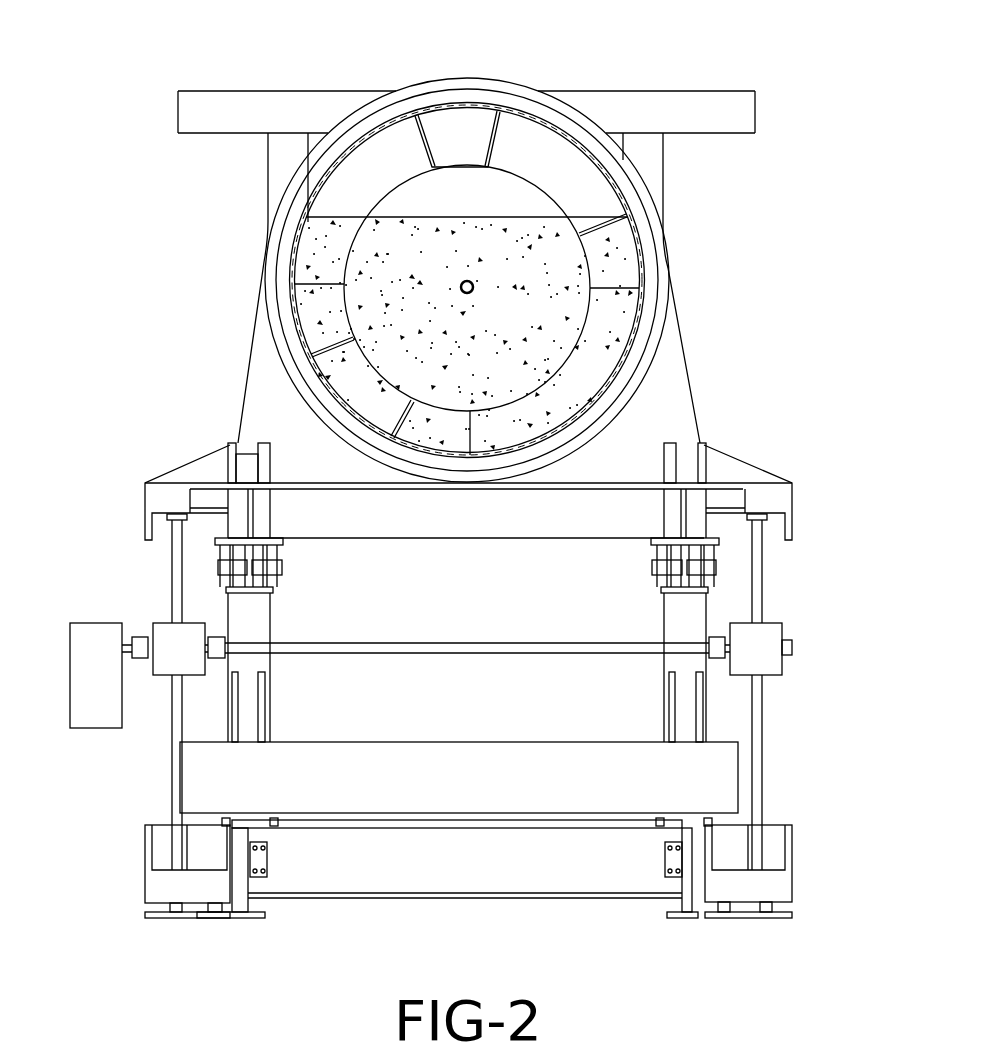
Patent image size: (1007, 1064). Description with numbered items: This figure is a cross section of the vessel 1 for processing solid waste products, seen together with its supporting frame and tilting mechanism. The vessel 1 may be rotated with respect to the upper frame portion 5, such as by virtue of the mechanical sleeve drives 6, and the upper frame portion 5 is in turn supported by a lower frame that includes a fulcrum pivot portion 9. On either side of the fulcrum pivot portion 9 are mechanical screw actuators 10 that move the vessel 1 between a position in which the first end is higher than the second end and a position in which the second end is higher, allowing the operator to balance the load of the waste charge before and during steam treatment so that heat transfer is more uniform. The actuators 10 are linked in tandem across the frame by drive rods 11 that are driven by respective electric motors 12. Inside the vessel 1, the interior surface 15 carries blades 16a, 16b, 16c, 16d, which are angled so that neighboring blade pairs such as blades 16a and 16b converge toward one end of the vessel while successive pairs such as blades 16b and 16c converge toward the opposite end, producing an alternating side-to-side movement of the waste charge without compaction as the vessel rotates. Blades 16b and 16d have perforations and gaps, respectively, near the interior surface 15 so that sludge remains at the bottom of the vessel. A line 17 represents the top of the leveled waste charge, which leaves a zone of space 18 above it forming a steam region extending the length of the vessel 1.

The vessel 1 is at (307, 212).
The upper frame portion 5 is at (700, 92).
The mechanical sleeve drives 6 is at (666, 258).
The fulcrum pivot portion 9 is at (272, 563).
The mechanical screw actuators 10 is at (177, 733).
The drive rods 11 is at (440, 643).
The electric motors 12 is at (77, 653).
The interior surface 15 is at (345, 166).
The blade 16a is at (315, 308).
The blade 16b is at (407, 423).
The blade 16c is at (463, 125).
The blade 16d is at (620, 243).
The line 17 is at (538, 215).
The zone of space 18 is at (449, 204).